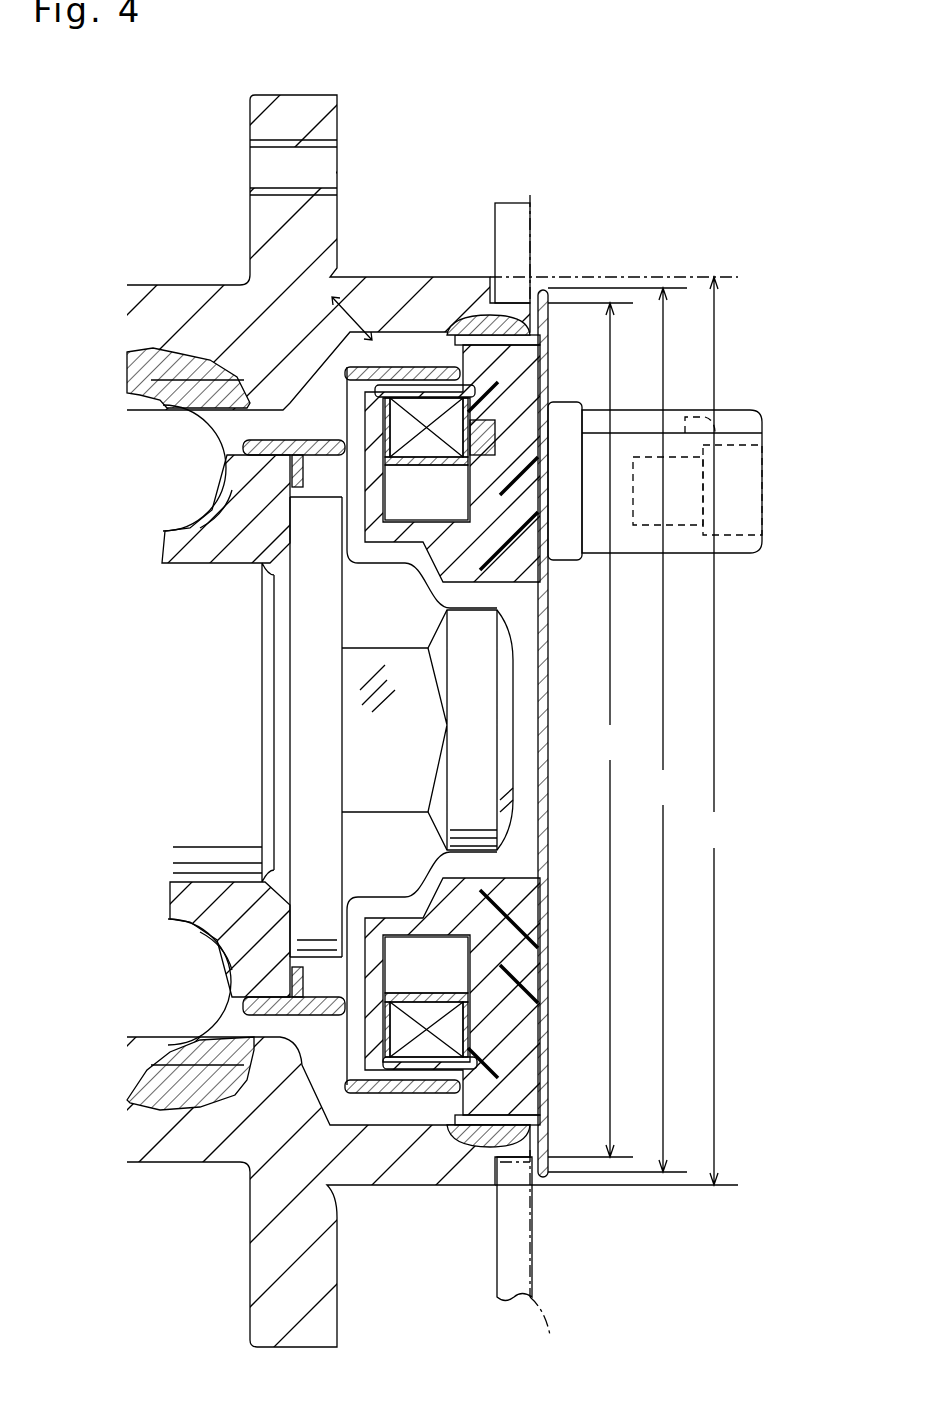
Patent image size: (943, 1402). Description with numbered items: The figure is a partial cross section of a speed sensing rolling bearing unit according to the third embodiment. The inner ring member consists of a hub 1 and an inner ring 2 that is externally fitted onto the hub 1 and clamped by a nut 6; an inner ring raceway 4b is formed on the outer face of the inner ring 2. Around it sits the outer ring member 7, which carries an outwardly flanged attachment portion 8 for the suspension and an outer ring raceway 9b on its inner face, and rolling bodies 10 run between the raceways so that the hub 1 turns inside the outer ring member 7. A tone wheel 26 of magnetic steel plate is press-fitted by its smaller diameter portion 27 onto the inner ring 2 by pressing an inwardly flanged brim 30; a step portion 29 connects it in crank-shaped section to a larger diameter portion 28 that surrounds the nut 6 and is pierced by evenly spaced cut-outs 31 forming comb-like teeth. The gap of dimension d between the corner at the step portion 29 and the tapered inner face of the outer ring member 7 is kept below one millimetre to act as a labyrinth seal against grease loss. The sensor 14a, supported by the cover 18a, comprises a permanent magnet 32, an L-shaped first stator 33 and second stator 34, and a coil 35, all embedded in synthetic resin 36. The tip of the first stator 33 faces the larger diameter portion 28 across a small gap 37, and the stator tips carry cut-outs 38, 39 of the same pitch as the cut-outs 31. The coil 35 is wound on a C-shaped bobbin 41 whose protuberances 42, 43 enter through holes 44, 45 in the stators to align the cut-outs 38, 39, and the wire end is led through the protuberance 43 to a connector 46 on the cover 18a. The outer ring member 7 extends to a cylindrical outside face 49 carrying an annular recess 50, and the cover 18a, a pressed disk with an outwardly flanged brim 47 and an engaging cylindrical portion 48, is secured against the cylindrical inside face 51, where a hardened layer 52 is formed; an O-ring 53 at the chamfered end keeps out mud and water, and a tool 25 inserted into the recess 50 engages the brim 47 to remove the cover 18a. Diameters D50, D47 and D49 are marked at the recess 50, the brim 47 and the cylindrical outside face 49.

The hub 1 is at (170, 528).
The inner ring 2 is at (240, 925).
The inner ring raceway 4b is at (227, 930).
The nut 6 is at (417, 677).
The outer ring member 7 is at (478, 270).
The attachment portion 8 is at (262, 112).
The outer ring raceway 9b is at (165, 407).
The rolling bodies 10 is at (193, 403).
The sensor 14a is at (500, 290).
The cover 18a is at (566, 1172).
The tool 25 is at (550, 1312).
The tone wheel 26 is at (178, 1246).
The smaller diameter portion 27 is at (175, 1060).
The larger diameter portion 28 is at (415, 1140).
The step portion 29 is at (300, 1060).
The brim 30 is at (243, 1003).
The cut-outs 31 is at (434, 368).
The permanent magnet 32 is at (460, 948).
The first stator 33 is at (385, 980).
The second stator 34 is at (470, 982).
The coil 35 is at (435, 1160).
The synthetic resin 36 is at (515, 394).
The small gap 37 is at (398, 372).
The cut-outs 38 is at (346, 422).
The cut-outs 39 is at (525, 362).
The bobbin 41 is at (465, 1020).
The protuberance 42 is at (380, 466).
The protuberance 43 is at (500, 500).
The through hole 44 is at (356, 505).
The through hole 45 is at (545, 412).
The connector 46 is at (745, 407).
The brim 47 is at (550, 292).
The engaging cylindrical portion 48 is at (502, 1145).
The cylindrical outside face 49 is at (445, 283).
The recess 50 is at (536, 300).
The cylindrical inside face 51 is at (520, 1130).
The hardened layer 52 is at (498, 1250).
The O-ring 53 is at (532, 1105).
The dimension of gap d is at (338, 305).
The diameter D50 is at (617, 722).
The diameter D47 is at (662, 730).
The diameter D49 is at (714, 731).